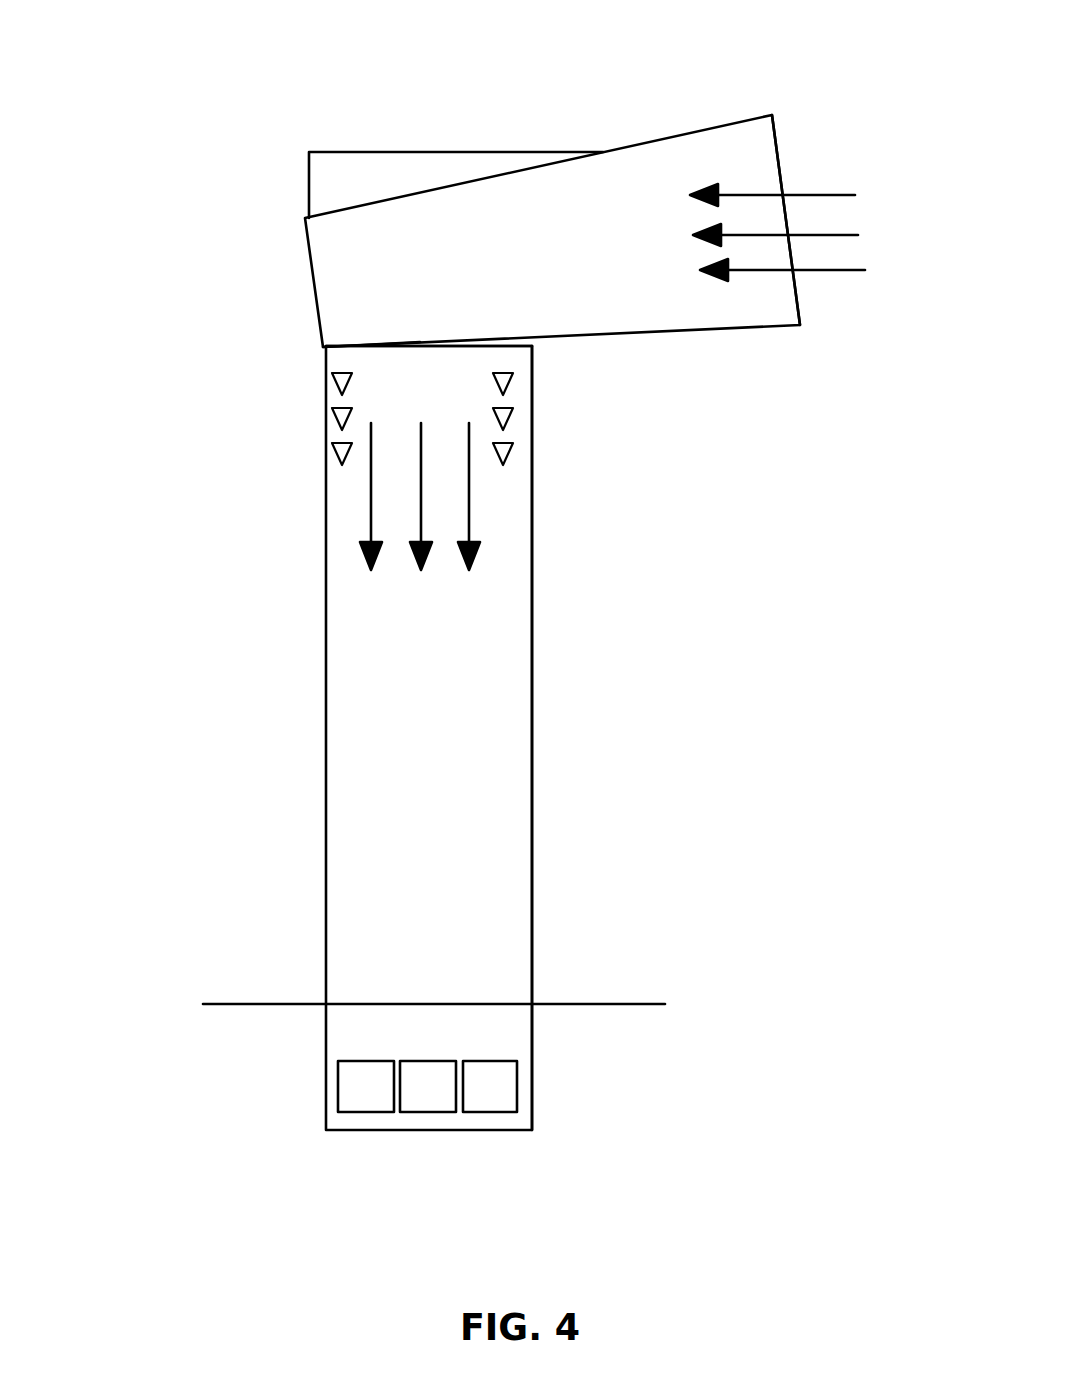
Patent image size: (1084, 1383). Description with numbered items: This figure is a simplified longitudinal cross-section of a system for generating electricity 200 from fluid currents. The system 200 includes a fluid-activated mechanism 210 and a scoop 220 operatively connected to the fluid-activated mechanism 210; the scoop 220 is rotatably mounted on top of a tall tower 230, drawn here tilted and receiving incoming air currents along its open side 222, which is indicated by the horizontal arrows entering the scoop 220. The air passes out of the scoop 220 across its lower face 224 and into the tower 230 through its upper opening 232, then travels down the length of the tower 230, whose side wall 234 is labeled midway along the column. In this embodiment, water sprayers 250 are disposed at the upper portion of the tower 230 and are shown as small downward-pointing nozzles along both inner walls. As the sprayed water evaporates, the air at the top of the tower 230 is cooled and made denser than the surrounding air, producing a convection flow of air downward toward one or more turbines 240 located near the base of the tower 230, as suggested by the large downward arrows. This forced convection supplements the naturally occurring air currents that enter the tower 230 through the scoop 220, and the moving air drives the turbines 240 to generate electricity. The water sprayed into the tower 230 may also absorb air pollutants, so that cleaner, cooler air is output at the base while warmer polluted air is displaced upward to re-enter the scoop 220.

The system for generating electricity 200 is at (212, 458).
The fluid-activated mechanism 210 is at (428, 168).
The scoop 220 is at (633, 185).
The light input face 222 is at (797, 300).
The light output face 224 is at (382, 343).
The tower 230 is at (487, 660).
The column input aperture 232 is at (470, 345).
The column side wall 234 is at (530, 753).
The turbines 240 is at (372, 1112).
The water sprayers 250 is at (332, 380).